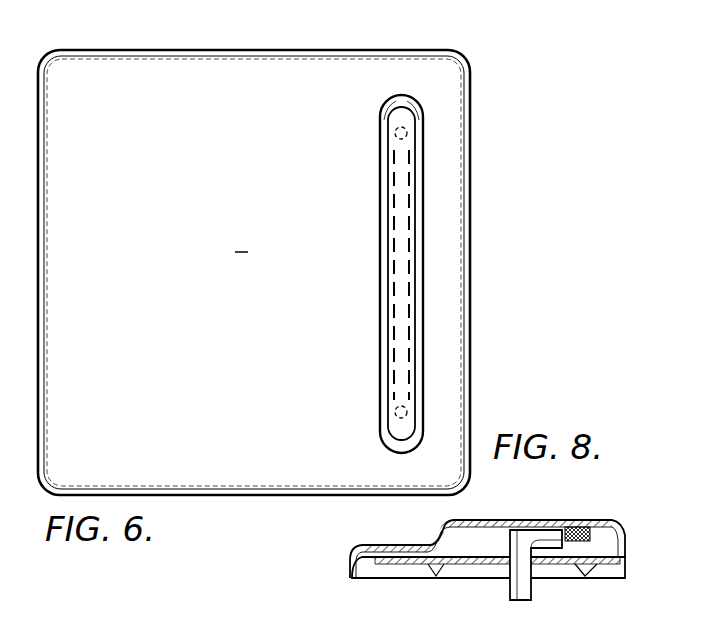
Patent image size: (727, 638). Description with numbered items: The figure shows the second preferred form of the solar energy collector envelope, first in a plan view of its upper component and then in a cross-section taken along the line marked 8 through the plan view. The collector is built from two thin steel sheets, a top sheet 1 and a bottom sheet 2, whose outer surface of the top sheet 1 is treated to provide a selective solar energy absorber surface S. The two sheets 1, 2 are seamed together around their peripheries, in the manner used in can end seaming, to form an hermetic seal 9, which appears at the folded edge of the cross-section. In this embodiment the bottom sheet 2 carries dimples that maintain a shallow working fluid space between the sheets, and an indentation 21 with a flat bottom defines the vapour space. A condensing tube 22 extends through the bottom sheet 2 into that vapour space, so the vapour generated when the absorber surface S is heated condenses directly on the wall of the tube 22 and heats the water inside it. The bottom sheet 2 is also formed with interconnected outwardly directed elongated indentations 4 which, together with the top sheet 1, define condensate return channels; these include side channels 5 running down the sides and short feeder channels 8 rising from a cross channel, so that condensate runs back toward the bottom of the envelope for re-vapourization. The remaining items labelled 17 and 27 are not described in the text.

In FIG. 6, the top sheet 1 is at (489, 351).
In FIG. 8, the bottom sheet 2 is at (400, 567).
In FIG. 8, the elongated indentations 4 is at (258, 636).
In FIG. 8, the side channels 5 is at (222, 636).
In FIG. 6, the feeder channels 8 is at (401, 42).
In FIG. 8, the feeder channels 8 is at (405, 633).
In FIG. 8, the hermetic seal 9 is at (354, 545).
In FIG. 8, the cover sheet 17 is at (395, 543).
In FIG. 6, the indentation 21 is at (415, 300).
In FIG. 8, the indentation 21 is at (486, 519).
In FIG. 6, the condensing tube 22 is at (408, 243).
In FIG. 8, the hook member 27 is at (520, 588).